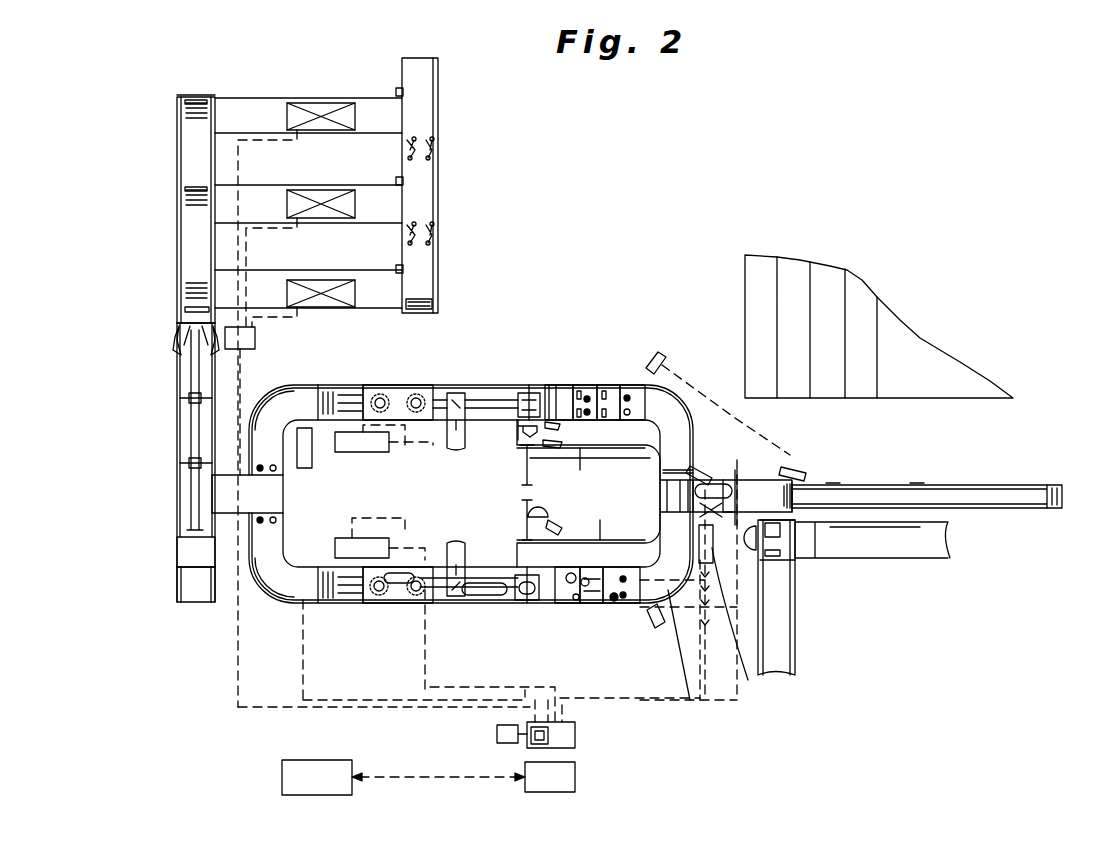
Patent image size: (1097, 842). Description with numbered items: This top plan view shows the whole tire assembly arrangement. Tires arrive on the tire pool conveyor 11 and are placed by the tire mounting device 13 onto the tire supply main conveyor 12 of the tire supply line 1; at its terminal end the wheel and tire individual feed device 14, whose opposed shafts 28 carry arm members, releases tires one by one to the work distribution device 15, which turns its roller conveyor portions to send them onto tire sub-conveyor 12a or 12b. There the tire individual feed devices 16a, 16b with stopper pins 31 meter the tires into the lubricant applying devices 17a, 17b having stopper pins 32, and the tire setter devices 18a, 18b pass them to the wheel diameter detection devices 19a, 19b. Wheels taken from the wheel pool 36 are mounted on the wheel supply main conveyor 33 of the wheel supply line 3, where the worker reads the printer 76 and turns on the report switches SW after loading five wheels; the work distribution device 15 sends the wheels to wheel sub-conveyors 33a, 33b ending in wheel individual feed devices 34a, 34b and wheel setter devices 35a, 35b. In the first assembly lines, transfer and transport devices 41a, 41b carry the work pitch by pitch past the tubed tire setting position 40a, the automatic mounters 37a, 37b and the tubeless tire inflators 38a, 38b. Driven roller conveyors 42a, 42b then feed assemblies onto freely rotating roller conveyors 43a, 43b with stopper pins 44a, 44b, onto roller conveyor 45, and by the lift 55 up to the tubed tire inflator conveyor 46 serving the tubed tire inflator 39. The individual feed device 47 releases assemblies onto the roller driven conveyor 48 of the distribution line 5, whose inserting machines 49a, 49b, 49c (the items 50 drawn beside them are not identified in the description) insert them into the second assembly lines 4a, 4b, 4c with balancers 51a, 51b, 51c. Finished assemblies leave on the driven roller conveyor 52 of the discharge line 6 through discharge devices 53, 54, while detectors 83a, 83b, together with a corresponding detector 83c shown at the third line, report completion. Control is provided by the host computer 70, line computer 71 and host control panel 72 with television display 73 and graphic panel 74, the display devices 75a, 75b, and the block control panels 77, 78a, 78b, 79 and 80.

The tire supply line 1 is at (772, 488).
The wheel supply line 3 is at (905, 514).
The second assembly line 4a is at (264, 280).
The second assembly line 4b is at (264, 190).
The second assembly line 4c is at (262, 103).
The distribution line 5 is at (175, 213).
The delivery or discharge line 6 is at (428, 260).
The tire pool conveyor 11 is at (788, 621).
The tire supply main conveyor 12 is at (766, 510).
The tire sub-conveyor 12a is at (670, 533).
The tire sub-conveyor 12b is at (668, 455).
The tire mounting device 13 is at (760, 540).
The wheel and tire individual feed device 14 is at (708, 420).
The work distribution device 15 is at (652, 500).
The tire individual feed device 16a is at (640, 605).
The tire individual feed device 16b is at (630, 392).
The lubricant applying device 17a is at (601, 603).
The lubricant applying device 17b is at (606, 392).
The tire setter device 18a is at (563, 603).
The tire setter device 18b is at (582, 390).
The wheel diameter detection device 19a is at (525, 603).
The wheel diameter detection device 19b is at (546, 392).
The opposed shafts 28 is at (712, 482).
The stopper pins 31 is at (616, 605).
The stopper pins 32 is at (586, 605).
The wheel supply main conveyor 33 is at (970, 495).
The wheel sub-conveyor 33a is at (600, 540).
The wheel sub-conveyor 33b is at (598, 449).
The wheel individual feed device 34a is at (553, 447).
The wheel individual feed device 34b is at (530, 436).
The wheel setter device 35a is at (530, 517).
The wheel setter device 35b is at (527, 472).
The wheel pool or storage 36 is at (838, 346).
The automatic mounter 37a is at (455, 598).
The automatic mounter 37b is at (455, 393).
The tubeless tire inflator 38a is at (396, 603).
The tubeless tire inflator 38b is at (398, 393).
The tubed tire inflator 39 is at (190, 487).
The tubed tire setting position 40a is at (485, 600).
The transfer and transport device 41a is at (497, 576).
The transfer and transport device 41b is at (505, 395).
The driven type roller conveyor 42a is at (345, 603).
The driven type roller conveyor 42b is at (345, 393).
The freely rotating roller conveyor 43a is at (272, 590).
The freely rotating roller conveyor 43b is at (290, 393).
The stopper pins 44a is at (278, 520).
The stopper pins 44b is at (278, 468).
The roller conveyor 45 is at (268, 503).
The tubed tire inflator conveyor 46 is at (182, 551).
The individual feed device 47 is at (178, 346).
The roller driven conveyor 48 is at (190, 243).
The inserting machine 49a is at (176, 290).
The inserting machine 49b is at (176, 197).
The inserting machine 49c is at (176, 107).
The pallet 50 is at (195, 118).
The balancer 51a is at (355, 292).
The balancer 51b is at (355, 204).
The balancer 51c is at (355, 117).
The driven type roller conveyor 52 is at (428, 293).
The tire and wheel assembly discharge device 53 is at (432, 228).
The tire and wheel assembly discharge device 54 is at (432, 125).
The lift 55 is at (192, 590).
The host computer 70 is at (331, 789).
The line computer 71 is at (563, 789).
The host control panel 72 is at (575, 735).
The television display 73 is at (532, 745).
The graphic panel 74 is at (497, 733).
The display device 75a is at (668, 705).
The display device 75b is at (660, 358).
The printer 76 is at (800, 468).
The tire and wheel supply control panel 77 is at (720, 625).
The mounter and inflator control panel 78a is at (380, 539).
The mounter and inflator control panel 78b is at (384, 440).
The tubed tire inflator collection and distribution control panel 79 is at (305, 430).
The balancer control panel 80 is at (241, 342).
The detector 83a is at (396, 267).
The detector 83b is at (396, 179).
The sensor 83c is at (396, 90).
The report switches SW is at (832, 484).